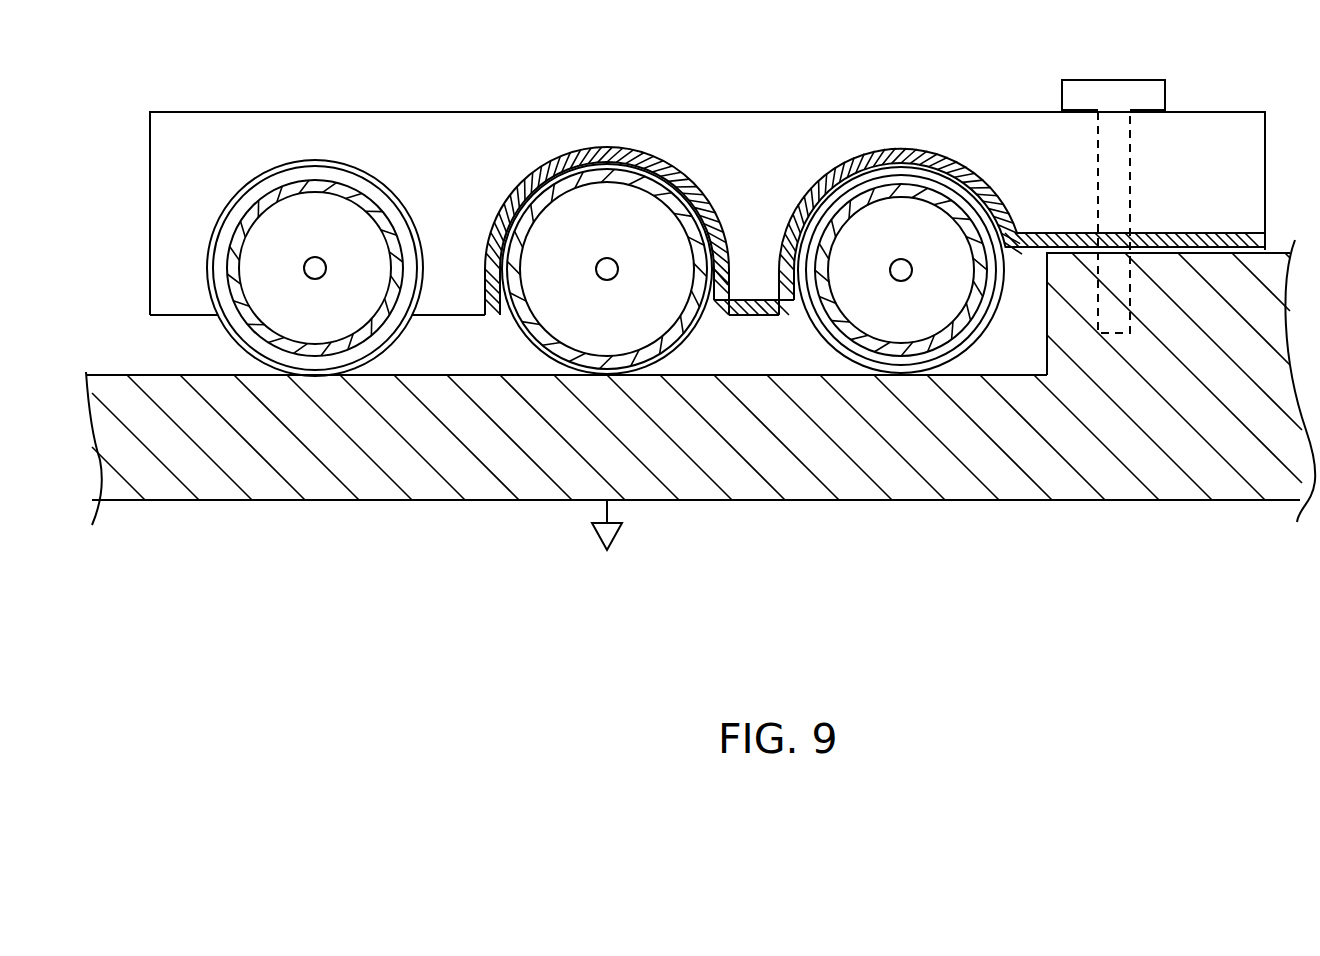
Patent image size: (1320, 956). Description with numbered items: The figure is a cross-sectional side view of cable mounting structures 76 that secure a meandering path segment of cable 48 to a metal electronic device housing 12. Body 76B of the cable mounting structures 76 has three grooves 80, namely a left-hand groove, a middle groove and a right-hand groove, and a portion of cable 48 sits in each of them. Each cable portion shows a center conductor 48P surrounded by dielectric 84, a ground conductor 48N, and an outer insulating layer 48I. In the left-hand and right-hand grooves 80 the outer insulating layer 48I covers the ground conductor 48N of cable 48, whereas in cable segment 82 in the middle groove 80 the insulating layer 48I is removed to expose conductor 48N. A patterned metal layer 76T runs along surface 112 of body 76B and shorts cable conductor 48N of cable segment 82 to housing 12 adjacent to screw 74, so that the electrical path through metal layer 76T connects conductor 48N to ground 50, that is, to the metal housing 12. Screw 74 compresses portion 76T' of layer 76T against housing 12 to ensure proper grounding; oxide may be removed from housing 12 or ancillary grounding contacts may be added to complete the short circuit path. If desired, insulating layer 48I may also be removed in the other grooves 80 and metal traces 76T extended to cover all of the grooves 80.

The housing 12 is at (1156, 490).
The cable 48 is at (587, 307).
The center conductor 48P is at (315, 257).
The ground conductor 48N is at (316, 350).
The outer insulating layer 48I is at (395, 322).
The dielectric insulator 84 is at (355, 226).
The ground 50 is at (617, 537).
The screw 74 is at (1150, 97).
The cable mounting structures 76 is at (707, 279).
The body 76B is at (710, 135).
The patterned metal layer 76T is at (854, 261).
The portion of metal layer 76T' is at (1132, 200).
The groove 80 is at (480, 280).
The cable segment 82 is at (503, 335).
The surface 112 is at (750, 298).